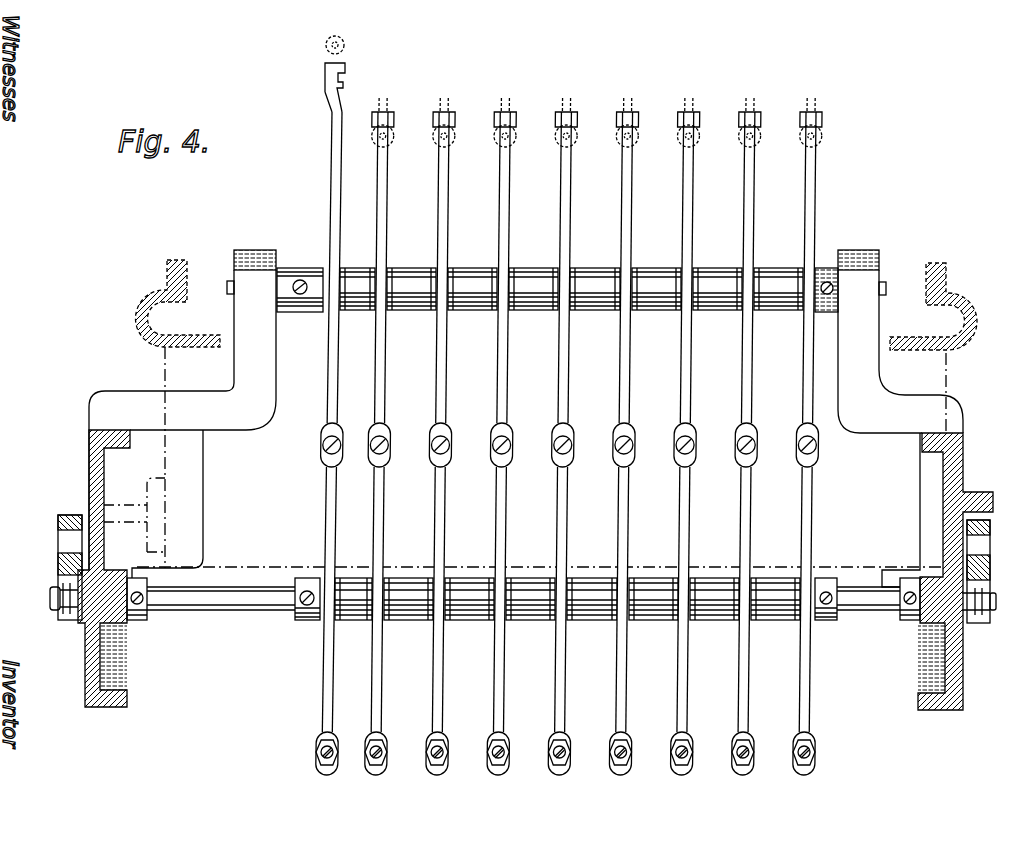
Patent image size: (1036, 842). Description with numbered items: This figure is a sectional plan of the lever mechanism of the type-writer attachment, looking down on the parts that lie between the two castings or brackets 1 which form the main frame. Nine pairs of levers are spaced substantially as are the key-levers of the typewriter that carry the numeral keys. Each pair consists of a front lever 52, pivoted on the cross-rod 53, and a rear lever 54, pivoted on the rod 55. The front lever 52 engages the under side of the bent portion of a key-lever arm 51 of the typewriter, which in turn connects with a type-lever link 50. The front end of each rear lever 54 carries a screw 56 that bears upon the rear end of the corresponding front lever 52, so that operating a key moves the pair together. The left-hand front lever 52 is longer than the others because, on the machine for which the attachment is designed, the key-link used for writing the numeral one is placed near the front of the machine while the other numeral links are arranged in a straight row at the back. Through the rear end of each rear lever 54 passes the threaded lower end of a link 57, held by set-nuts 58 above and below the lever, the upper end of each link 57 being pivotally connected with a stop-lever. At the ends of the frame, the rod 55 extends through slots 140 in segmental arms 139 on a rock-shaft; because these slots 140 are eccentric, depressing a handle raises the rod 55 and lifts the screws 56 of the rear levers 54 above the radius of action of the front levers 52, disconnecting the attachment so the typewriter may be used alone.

The casting or bracket 1 is at (88, 490).
The type-lever link 50 is at (585, 160).
The key-lever arm 51 is at (498, 109).
The front lever 52 is at (560, 404).
The cross-rod 53 is at (229, 285).
The rear lever 54 is at (617, 535).
The rod 55 is at (237, 614).
The screw 56 is at (433, 444).
The link 57 is at (443, 749).
The set-nut 58 is at (615, 745).
The segmental arm 139 is at (62, 572).
The slot 140 is at (58, 539).